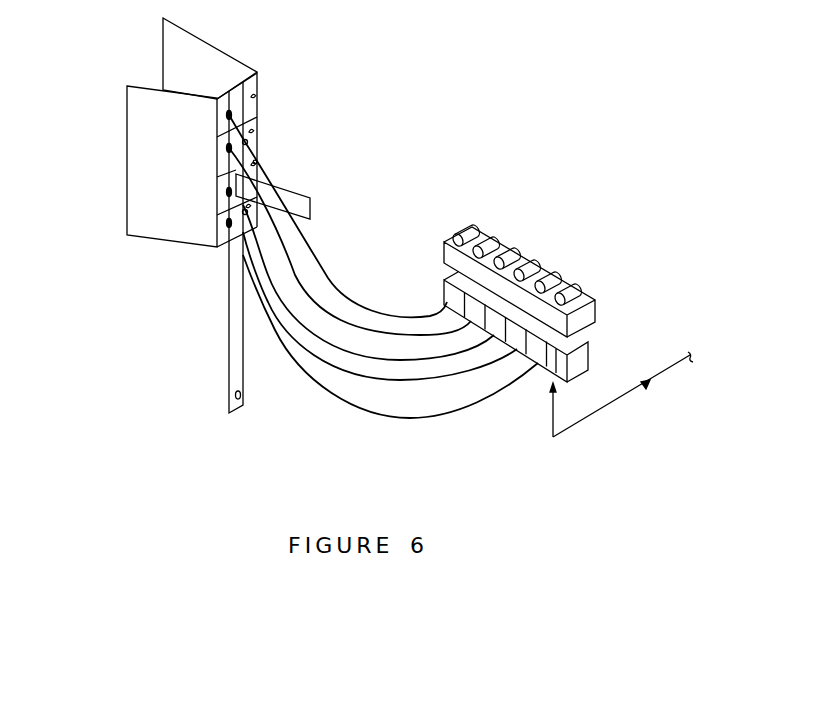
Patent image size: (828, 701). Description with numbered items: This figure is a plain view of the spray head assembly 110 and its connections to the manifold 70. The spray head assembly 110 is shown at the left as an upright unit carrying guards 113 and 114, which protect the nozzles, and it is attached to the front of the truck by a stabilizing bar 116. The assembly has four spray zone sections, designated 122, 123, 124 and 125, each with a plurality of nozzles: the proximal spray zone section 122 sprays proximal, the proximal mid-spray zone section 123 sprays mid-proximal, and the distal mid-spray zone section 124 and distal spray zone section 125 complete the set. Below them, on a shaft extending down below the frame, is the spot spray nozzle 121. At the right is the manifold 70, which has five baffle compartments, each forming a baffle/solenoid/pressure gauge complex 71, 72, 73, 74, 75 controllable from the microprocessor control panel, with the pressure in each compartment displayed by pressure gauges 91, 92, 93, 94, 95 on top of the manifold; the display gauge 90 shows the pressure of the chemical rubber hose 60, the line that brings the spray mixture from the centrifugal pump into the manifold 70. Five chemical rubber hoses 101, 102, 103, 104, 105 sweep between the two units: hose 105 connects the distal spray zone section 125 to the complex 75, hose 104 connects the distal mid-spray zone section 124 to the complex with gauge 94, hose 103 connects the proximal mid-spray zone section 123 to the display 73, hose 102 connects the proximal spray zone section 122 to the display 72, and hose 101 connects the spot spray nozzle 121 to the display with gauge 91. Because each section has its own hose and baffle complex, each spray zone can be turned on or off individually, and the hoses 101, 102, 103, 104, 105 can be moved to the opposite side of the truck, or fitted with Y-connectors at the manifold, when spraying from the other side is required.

The chemical rubber hose 60 is at (598, 408).
The manifold 70 is at (588, 357).
The baffle/solenoid/pressure gauge complex 71 is at (537, 373).
The baffle/solenoid/pressure gauge display 72 is at (515, 358).
The baffle/solenoid/pressure gauge display 73 is at (492, 347).
The baffle/solenoid/pressure gauge complex 74 is at (471, 326).
The baffle/solenoid/pressure gauge complex 75 is at (443, 294).
The display gauge 90 is at (587, 288).
The pressure gauge 91 is at (570, 273).
The pressure gauge 92 is at (547, 260).
The pressure gauge 93 is at (523, 247).
The pressure gauge 94 is at (500, 235).
The pressure gauge 95 is at (487, 226).
The chemical rubber hose 101 is at (463, 410).
The chemical rubber hose 102 is at (430, 378).
The chemical rubber hose 103 is at (393, 355).
The chemical rubber hose 104 is at (370, 330).
The chemical rubber hose 105 is at (348, 303).
The spray head assembly 110 is at (226, 218).
The guard 113 is at (180, 62).
The guard 114 is at (160, 162).
The stabilizing bar 116 is at (303, 187).
The spot spray nozzle 121 is at (228, 386).
The proximal spray zone section 122 is at (251, 205).
The proximal mid-spray zone section 123 is at (256, 163).
The distal mid-spray zone section 124 is at (254, 130).
The distal spray zone section 125 is at (256, 95).